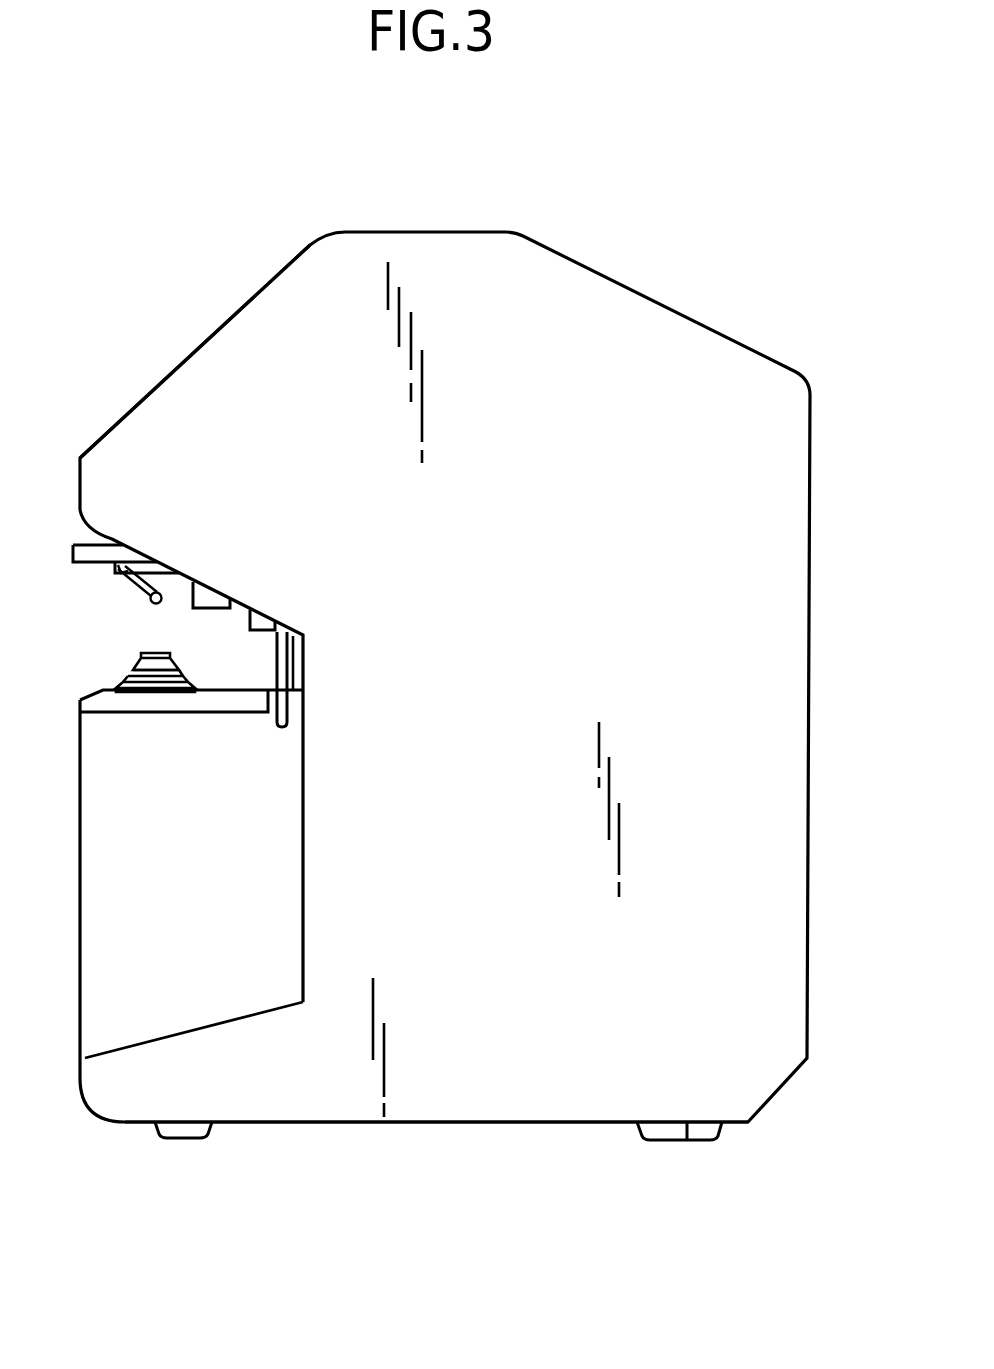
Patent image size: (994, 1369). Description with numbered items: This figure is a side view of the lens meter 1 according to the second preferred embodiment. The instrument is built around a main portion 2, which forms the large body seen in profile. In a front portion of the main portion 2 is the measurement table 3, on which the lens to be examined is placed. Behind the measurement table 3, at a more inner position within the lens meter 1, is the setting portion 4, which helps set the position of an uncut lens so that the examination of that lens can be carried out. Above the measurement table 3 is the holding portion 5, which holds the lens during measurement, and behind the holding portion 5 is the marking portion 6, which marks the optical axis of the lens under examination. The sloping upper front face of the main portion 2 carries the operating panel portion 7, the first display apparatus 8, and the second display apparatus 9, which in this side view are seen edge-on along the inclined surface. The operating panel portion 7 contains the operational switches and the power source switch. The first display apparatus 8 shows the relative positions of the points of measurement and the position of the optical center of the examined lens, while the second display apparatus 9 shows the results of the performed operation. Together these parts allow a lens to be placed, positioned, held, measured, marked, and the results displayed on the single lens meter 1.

The lens meter 1 is at (826, 507).
The main portion 2 is at (478, 1103).
The measurement table 3 is at (125, 676).
The setting portion 4 is at (277, 666).
The holding portion 5 is at (132, 591).
The marking portion 6 is at (207, 614).
The operating panel portion 7 is at (191, 351).
The first display apparatus 8 is at (191, 351).
The second display apparatus 9 is at (202, 336).